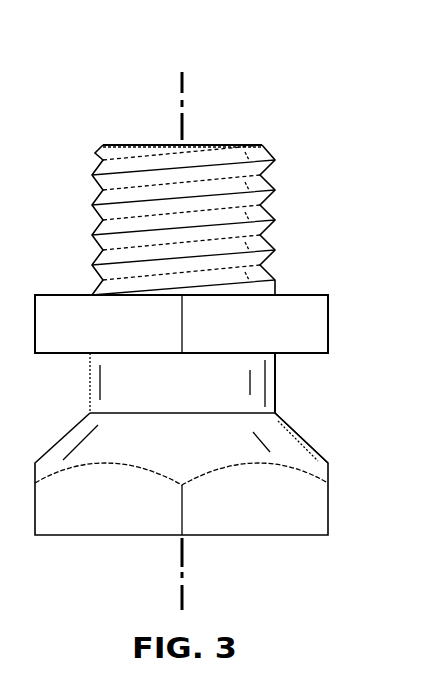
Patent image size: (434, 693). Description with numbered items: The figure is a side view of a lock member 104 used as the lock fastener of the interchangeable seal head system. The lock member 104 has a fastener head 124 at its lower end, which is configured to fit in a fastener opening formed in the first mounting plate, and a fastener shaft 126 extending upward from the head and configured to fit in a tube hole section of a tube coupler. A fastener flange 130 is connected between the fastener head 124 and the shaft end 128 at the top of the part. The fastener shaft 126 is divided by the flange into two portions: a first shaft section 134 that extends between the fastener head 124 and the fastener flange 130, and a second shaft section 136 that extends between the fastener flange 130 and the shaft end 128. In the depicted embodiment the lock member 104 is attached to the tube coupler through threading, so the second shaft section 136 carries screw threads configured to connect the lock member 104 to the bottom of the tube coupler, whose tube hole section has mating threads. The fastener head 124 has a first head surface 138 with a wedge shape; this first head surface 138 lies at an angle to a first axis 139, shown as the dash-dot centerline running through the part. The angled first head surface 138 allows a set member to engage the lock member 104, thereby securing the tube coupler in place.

The lock member 104 is at (110, 66).
The fastener shaft 126 is at (227, 144).
The shaft end 128 is at (128, 145).
The second shaft section 136 is at (273, 203).
The fastener flange 130 is at (330, 323).
The first shaft section 134 is at (90, 383).
The first head surface 138 is at (323, 419).
The fastener head 124 is at (330, 505).
The first axis 139 is at (178, 555).